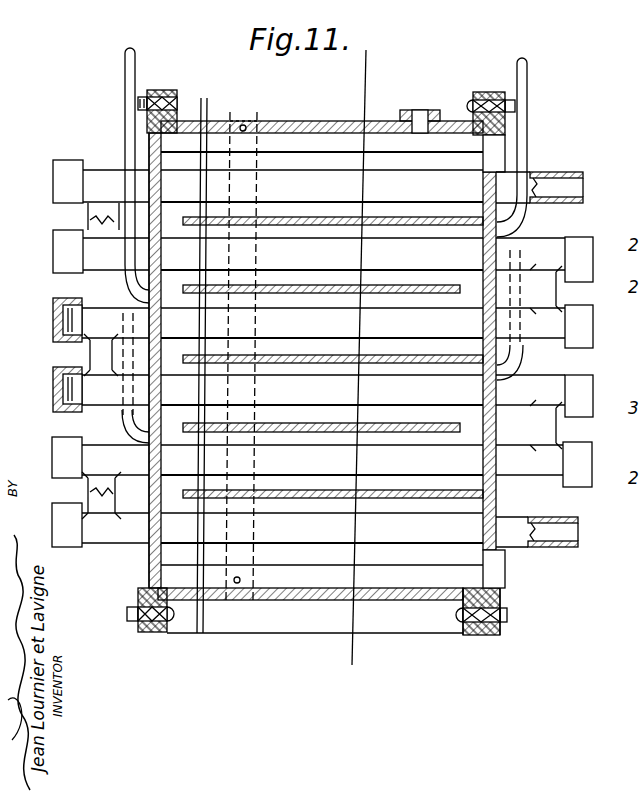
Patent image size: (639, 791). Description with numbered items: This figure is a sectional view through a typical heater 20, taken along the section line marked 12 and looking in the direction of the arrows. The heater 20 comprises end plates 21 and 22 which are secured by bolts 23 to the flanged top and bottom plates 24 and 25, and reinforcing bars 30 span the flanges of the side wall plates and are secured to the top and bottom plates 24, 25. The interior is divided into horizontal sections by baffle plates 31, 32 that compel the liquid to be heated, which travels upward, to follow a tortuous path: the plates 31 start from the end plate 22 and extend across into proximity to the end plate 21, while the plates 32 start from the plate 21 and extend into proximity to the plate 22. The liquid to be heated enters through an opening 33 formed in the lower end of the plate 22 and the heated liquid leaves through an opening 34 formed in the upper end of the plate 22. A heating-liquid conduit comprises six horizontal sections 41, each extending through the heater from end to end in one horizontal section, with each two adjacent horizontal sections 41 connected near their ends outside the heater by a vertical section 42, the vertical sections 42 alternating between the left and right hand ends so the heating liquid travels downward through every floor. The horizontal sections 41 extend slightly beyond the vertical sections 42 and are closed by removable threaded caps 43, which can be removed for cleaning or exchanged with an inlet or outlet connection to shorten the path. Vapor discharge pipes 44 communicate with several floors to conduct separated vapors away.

The section line 12 is at (336, 80).
The heater 20 is at (147, 552).
The end plate 21 is at (146, 577).
The end plate 22 is at (500, 603).
The bolt 23 is at (183, 100).
The top plate 24 is at (273, 121).
The bottom plate 25 is at (278, 600).
The reinforcing bar 30 is at (258, 252).
The baffle plate 31 is at (313, 216).
The baffle plate 32 is at (418, 284).
The opening 33 is at (493, 578).
The opening 34 is at (500, 152).
The horizontal section 41 is at (531, 173).
The vertical section 42 is at (97, 355).
The removable threaded cap 43 is at (55, 312).
The vapor discharge pipe 44 is at (130, 82).